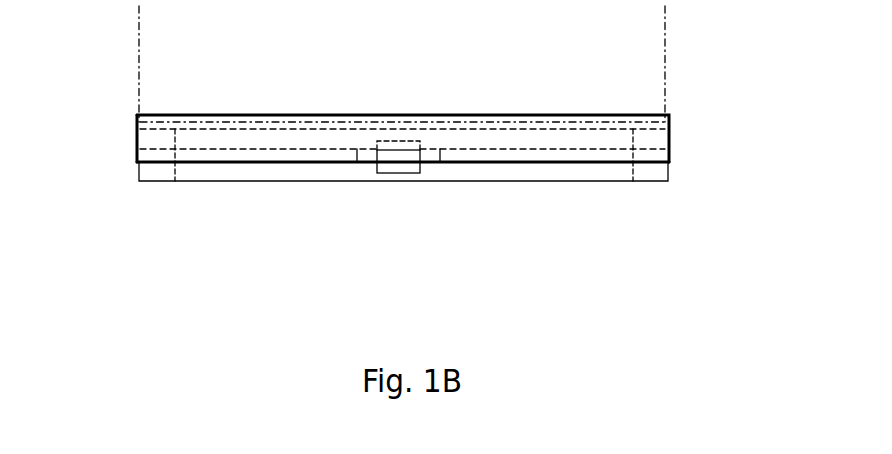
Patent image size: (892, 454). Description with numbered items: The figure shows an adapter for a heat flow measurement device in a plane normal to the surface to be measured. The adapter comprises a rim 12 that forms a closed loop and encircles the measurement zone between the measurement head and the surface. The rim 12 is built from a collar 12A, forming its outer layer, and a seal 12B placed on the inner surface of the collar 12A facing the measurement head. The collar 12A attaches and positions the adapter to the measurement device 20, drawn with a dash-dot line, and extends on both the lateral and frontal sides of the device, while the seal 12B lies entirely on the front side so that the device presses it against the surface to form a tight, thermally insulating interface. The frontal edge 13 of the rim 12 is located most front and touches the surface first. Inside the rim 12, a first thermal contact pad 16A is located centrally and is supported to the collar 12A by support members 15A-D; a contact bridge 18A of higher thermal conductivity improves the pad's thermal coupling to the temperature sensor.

The rim 12 is at (243, 92).
The collar 12A is at (137, 122).
The seal 12B is at (150, 173).
The frontal edge 13 is at (482, 163).
The support members 15A-D is at (247, 153).
The first thermal contact pad 16A is at (368, 154).
The contact bridge 18A is at (402, 142).
The measurement device 20 is at (668, 67).